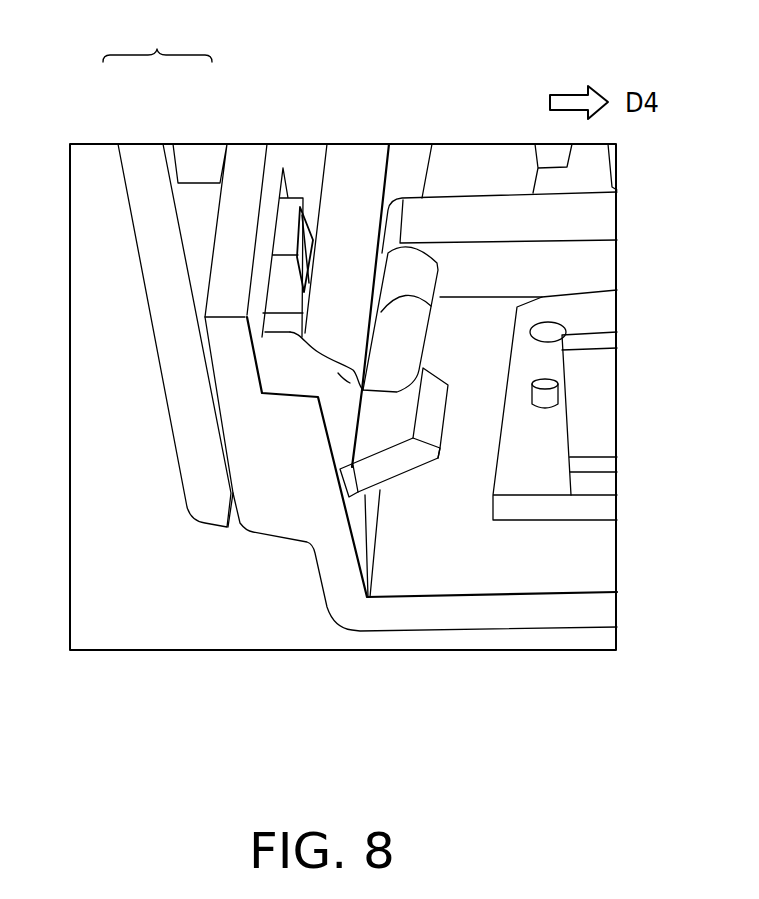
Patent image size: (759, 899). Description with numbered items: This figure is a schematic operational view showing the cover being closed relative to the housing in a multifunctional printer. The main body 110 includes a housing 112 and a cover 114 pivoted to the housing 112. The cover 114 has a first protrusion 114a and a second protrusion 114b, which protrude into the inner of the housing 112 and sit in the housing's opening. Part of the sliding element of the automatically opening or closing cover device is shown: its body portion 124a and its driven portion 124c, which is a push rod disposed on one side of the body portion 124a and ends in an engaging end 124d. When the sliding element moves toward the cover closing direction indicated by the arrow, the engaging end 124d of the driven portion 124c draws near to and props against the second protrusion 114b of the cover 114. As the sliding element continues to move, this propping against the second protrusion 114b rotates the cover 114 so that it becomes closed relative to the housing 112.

The main body 110 is at (157, 41).
The cover 114 is at (140, 147).
The housing 112 is at (204, 147).
The first protrusion 114a is at (294, 208).
The second protrusion 114b is at (404, 460).
The engaging end 124d is at (410, 268).
The driven portion 124c is at (465, 215).
The body portion 124a is at (607, 505).